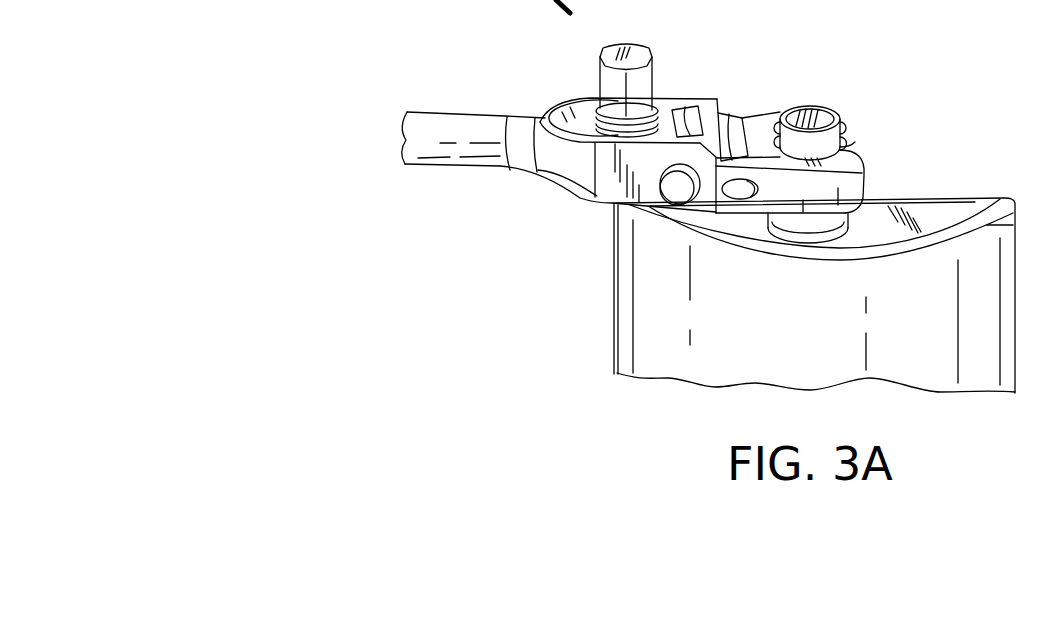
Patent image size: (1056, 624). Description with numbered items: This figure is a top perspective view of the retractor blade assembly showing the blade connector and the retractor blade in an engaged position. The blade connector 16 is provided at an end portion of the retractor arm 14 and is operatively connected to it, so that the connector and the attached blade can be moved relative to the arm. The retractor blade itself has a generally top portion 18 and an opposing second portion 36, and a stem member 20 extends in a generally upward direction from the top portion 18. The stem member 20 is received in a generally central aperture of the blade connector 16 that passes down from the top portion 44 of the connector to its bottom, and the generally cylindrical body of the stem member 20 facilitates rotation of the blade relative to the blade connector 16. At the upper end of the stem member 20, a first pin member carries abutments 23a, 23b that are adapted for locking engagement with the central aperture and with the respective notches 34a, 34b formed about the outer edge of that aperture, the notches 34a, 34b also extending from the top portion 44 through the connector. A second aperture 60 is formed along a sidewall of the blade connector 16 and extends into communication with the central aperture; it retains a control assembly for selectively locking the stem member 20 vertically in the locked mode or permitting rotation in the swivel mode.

The retractor arm 14 is at (449, 128).
The blade connector 16 is at (864, 172).
The top portion 18 is at (975, 202).
The stem member 20 is at (826, 114).
The abutment 23a is at (855, 146).
The abutment 23b is at (771, 142).
The notch 34a is at (853, 143).
The notch 34b is at (760, 127).
The second portion 36 is at (975, 360).
The top portion 44 is at (778, 118).
The second aperture 60 is at (728, 202).